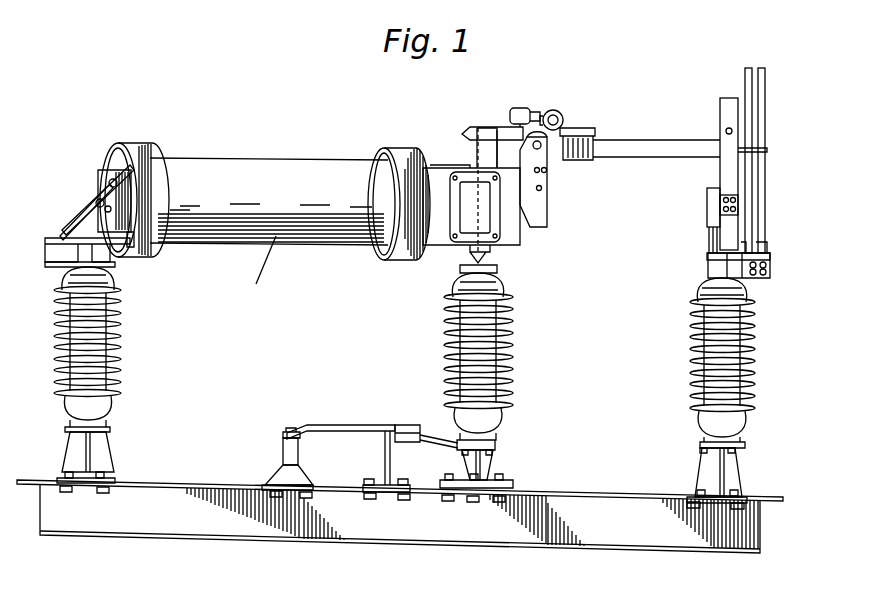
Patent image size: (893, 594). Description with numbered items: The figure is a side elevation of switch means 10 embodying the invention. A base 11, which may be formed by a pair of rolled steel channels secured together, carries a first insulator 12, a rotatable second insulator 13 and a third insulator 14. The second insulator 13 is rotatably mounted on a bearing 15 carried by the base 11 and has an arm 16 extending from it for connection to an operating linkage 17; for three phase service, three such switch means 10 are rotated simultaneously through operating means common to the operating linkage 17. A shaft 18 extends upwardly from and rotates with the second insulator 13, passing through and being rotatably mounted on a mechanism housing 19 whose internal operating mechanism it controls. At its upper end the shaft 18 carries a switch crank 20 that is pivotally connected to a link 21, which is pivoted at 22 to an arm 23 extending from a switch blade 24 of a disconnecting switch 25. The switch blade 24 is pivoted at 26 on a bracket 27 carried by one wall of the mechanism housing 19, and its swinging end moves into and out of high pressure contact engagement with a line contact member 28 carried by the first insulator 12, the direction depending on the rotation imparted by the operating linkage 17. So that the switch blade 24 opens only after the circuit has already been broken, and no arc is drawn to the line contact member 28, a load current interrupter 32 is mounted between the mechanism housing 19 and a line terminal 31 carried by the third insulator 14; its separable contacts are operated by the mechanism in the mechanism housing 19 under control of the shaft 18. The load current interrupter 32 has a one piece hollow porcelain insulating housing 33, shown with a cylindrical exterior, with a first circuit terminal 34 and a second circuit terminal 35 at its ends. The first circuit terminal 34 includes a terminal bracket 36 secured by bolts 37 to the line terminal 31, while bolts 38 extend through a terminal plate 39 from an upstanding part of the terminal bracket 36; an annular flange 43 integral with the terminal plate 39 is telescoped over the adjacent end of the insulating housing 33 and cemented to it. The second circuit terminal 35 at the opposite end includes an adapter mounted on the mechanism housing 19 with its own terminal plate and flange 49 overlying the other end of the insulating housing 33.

The switch means 10 is at (149, 83).
The base 11 is at (197, 466).
The first insulator 12 is at (756, 352).
The second insulator 13 is at (513, 347).
The third insulator 14 is at (119, 347).
The bearing 15 is at (500, 483).
The arm 16 is at (428, 432).
The operating linkage 17 is at (330, 402).
The shaft 18 is at (476, 150).
The mechanism housing 19 is at (521, 232).
The switch crank 20 is at (498, 127).
The link 21 is at (539, 108).
The pivot 22 is at (561, 115).
The arm 23 is at (591, 128).
The switch blade 24 is at (664, 146).
The disconnecting switch 25 is at (662, 97).
The pivot 26 is at (547, 158).
The bracket 27 is at (536, 203).
The line contact member 28 is at (778, 192).
The line terminal 31 is at (38, 244).
The load current interrupter 32 is at (241, 146).
The insulating housing 33 is at (298, 165).
The first circuit terminal 34 is at (93, 114).
The second circuit terminal 35 is at (383, 126).
The terminal bracket 36 is at (86, 205).
The bolts 37 is at (75, 222).
The bolts 38 is at (95, 178).
The terminal plate 39 is at (116, 147).
The annular flange 43 is at (147, 146).
The flange 49 is at (406, 160).